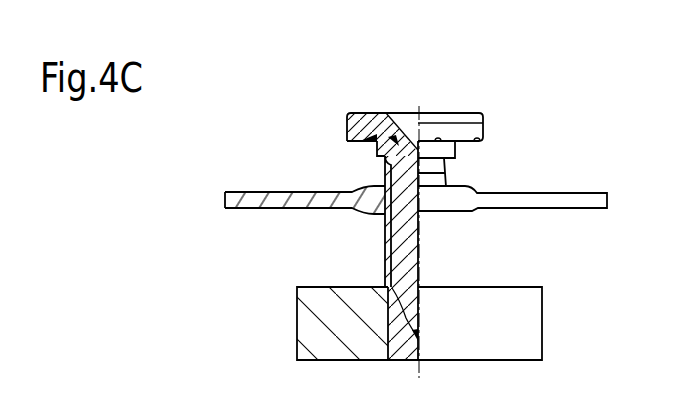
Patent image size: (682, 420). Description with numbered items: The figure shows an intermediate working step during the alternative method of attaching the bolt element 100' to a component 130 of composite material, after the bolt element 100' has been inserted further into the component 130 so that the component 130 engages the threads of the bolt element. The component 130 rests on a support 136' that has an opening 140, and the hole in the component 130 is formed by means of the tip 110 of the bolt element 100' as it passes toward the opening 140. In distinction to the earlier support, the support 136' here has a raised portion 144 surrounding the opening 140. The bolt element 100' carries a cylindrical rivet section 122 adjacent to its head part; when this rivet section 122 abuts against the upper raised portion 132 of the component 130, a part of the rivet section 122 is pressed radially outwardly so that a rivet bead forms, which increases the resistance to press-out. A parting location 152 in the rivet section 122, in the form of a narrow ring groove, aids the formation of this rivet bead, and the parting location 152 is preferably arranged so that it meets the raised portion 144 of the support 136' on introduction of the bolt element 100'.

The bolt element 100' is at (380, 216).
The parting location 152 is at (418, 117).
The rivet section 122 is at (440, 151).
The component 130 is at (588, 202).
The upper raised portion 132 is at (352, 185).
The support 136' is at (373, 322).
The raised portion 144 is at (382, 282).
The opening 140 is at (369, 382).
The tip 110 is at (407, 312).